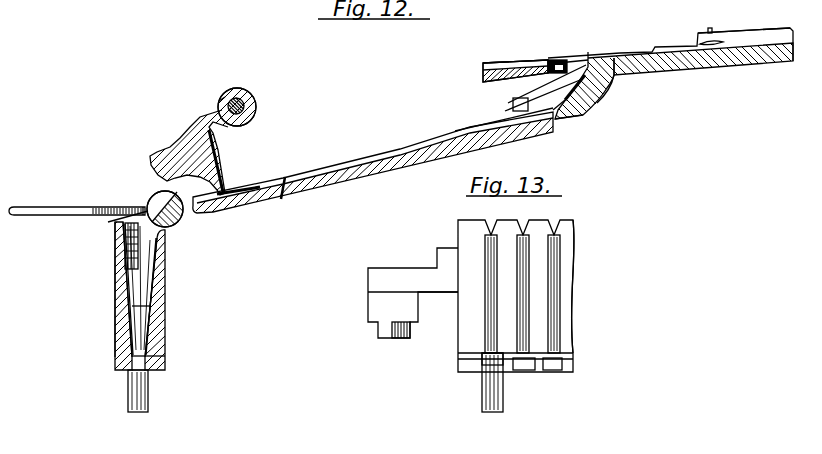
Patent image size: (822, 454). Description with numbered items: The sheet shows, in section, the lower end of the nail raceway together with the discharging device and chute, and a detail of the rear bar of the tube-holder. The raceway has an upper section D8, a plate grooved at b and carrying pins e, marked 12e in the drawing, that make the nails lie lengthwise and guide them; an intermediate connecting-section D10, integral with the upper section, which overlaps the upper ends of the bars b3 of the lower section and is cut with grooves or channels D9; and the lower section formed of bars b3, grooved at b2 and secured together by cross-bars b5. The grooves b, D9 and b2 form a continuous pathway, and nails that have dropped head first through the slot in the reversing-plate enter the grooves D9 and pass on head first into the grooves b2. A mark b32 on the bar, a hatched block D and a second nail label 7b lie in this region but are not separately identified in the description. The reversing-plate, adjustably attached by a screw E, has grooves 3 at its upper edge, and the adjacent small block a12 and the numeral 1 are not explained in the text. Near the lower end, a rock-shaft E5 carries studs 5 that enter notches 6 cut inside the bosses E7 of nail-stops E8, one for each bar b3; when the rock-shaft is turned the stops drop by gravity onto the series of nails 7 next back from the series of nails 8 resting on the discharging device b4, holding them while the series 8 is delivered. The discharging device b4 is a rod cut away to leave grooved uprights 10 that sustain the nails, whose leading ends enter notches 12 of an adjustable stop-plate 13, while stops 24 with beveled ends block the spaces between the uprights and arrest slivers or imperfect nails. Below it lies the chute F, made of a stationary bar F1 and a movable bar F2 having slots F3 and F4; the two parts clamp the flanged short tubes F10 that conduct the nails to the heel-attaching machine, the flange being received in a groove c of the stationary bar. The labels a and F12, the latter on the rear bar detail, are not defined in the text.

In FIG. 12, the raceway bars b3 is at (272, 204).
In FIG. 12, the bar mark b32 is at (284, 177).
In FIG. 12, the grooves b2 is at (485, 128).
In FIG. 12, the series of nails 7 is at (237, 190).
In FIG. 12, the nail-stops E8 is at (143, 162).
In FIG. 12, the studs 5 is at (240, 90).
In FIG. 12, the rock-shaft E5 is at (246, 103).
In FIG. 12, the bosses E7 is at (249, 114).
In FIG. 12, the notches 6 is at (219, 101).
In FIG. 12, the uprights or projections 10 is at (165, 209).
In FIG. 12, the discharging device b4 is at (180, 222).
In FIG. 12, the adjustable stop-plate 13 is at (104, 197).
In FIG. 12, the notches 12 is at (149, 197).
In FIG. 12, the stops 24 is at (102, 222).
In FIG. 12, the chute F is at (196, 258).
In FIG. 13, the chute F is at (434, 238).
In FIG. 12, the series of nails 8 is at (124, 263).
In FIG. 12, the stationary bar F1 is at (165, 305).
In FIG. 13, the stationary bar F1 is at (566, 238).
In FIG. 12, the movable bar F2 is at (103, 296).
In FIG. 12, the slots F4 is at (103, 321).
In FIG. 12, the slots F3 is at (143, 328).
In FIG. 13, the slots F3 is at (552, 312).
In FIG. 12, the nut a is at (133, 356).
In FIG. 13, the nut a is at (482, 359).
In FIG. 12, the groove c is at (144, 356).
In FIG. 13, the groove c is at (573, 358).
In FIG. 12, the short tubes F10 is at (182, 399).
In FIG. 13, the short tubes F10 is at (470, 400).
In FIG. 12, the grooves 3 is at (490, 63).
In FIG. 12, the screw E is at (527, 52).
In FIG. 12, the block top 1 is at (537, 34).
In FIG. 12, the bolt head a12 is at (552, 60).
In FIG. 12, the grooves b is at (567, 57).
In FIG. 12, the grooves or channels D9 is at (536, 95).
In FIG. 12, the cross-bars b5 is at (590, 64).
In FIG. 12, the block D is at (608, 100).
In FIG. 12, the intermediate connecting-section D10 is at (612, 102).
In FIG. 12, the block bottom 7b is at (586, 114).
In FIG. 12, the upper section D8 is at (690, 97).
In FIG. 12, the slot e is at (711, 28).
In FIG. 12, the bar top 12e is at (752, 9).
In FIG. 13, the hatched block F12 is at (358, 347).